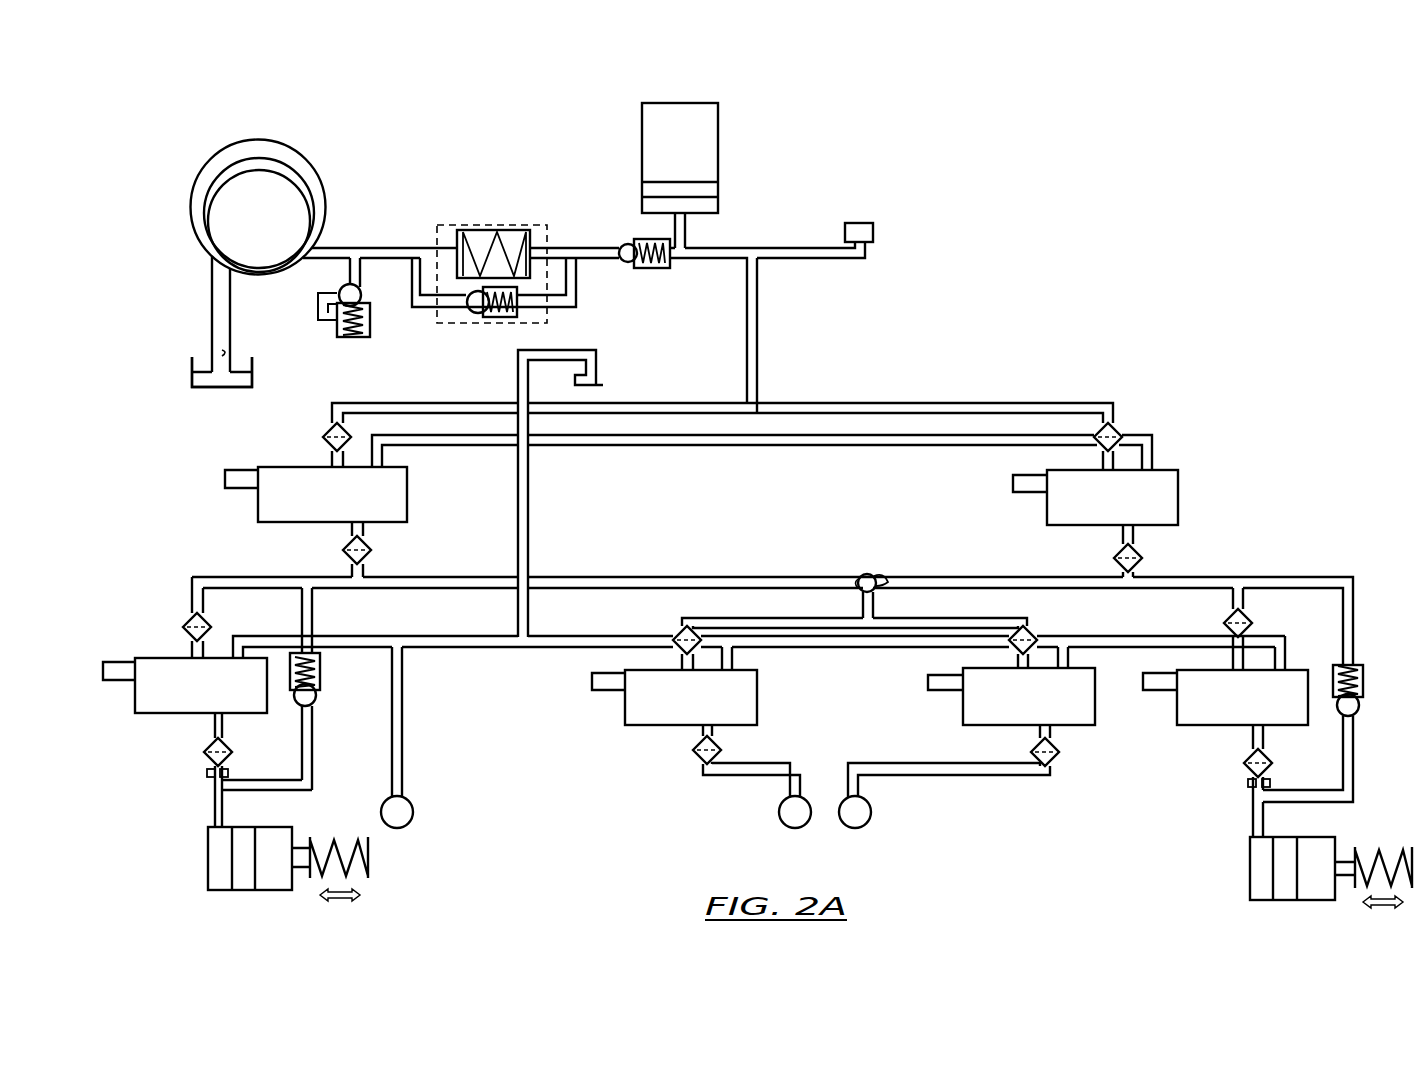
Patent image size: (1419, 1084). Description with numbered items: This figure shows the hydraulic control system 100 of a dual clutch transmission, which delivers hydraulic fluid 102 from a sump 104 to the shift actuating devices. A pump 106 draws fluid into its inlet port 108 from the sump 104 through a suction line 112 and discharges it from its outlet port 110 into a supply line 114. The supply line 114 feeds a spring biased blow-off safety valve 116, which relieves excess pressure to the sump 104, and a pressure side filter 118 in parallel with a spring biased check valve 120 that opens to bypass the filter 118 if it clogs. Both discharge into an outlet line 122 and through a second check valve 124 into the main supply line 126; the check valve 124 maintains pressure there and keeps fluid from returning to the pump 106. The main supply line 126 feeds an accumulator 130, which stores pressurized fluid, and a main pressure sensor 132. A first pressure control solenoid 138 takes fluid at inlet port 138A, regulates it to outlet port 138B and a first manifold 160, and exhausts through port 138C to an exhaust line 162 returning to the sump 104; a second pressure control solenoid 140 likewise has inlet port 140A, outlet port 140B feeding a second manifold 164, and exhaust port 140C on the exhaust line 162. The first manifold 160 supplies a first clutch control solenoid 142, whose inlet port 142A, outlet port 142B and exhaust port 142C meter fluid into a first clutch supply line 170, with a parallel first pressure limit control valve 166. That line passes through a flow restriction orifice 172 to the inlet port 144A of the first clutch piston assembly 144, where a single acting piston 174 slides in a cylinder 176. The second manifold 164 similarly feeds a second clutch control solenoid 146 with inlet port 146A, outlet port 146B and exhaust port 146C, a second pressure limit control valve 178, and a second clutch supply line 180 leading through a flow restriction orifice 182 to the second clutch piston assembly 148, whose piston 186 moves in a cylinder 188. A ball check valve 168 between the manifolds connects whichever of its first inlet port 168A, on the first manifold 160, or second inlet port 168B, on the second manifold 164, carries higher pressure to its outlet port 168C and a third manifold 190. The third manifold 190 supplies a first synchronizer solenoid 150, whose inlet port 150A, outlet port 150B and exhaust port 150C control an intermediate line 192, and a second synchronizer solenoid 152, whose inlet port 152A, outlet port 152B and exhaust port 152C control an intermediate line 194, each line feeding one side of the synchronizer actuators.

The hydraulic control system 100 is at (1030, 258).
The hydraulic fluid 102 is at (254, 364).
The sump 104 is at (318, 306).
The pump 106 is at (262, 140).
The inlet port 108 is at (216, 274).
The outlet port 110 is at (328, 242).
The suction line 112 is at (212, 353).
The supply line 114 is at (413, 246).
The spring biased blow-off safety valve 116 is at (337, 326).
The pressure side filter 118 is at (495, 228).
The spring biased check valve 120 is at (492, 320).
The outlet line 122 is at (550, 245).
The second check valve 124 is at (641, 270).
The main supply line 126 is at (775, 246).
The accumulator 130 is at (720, 140).
The main pressure sensor 132 is at (862, 222).
The first pressure control solenoid 138 is at (256, 506).
The inlet port 138A is at (332, 460).
The outlet port 138B is at (366, 529).
The exhaust port 138C is at (378, 434).
The second pressure control solenoid 140 is at (1046, 510).
The inlet port 140A is at (1104, 462).
The outlet port 140B is at (1136, 530).
The exhaust port 140C is at (1150, 434).
The first clutch control solenoid 142 is at (146, 715).
The inlet port 142A is at (192, 652).
The outlet port 142B is at (223, 725).
The exhaust port 142C is at (238, 652).
The first clutch piston assembly 144 is at (292, 830).
The inlet port 144A is at (214, 812).
The second clutch control solenoid 146 is at (1191, 728).
The inlet port 146A is at (1234, 655).
The outlet port 146B is at (1266, 736).
The exhaust port 146C is at (1283, 660).
The second clutch piston assembly 148 is at (1306, 901).
The first synchronizer solenoid 150 is at (626, 708).
The inlet port 150A is at (680, 663).
The outlet port 150B is at (704, 732).
The exhaust port 150C is at (734, 660).
The second synchronizer solenoid 152 is at (1095, 734).
The inlet port 152A is at (1015, 660).
The outlet port 152B is at (1042, 736).
The exhaust port 152C is at (1060, 660).
The first manifold 160 is at (551, 576).
The exhaust line 162 is at (678, 448).
The second manifold 164 is at (1035, 576).
The first pressure limit control valve 166 is at (321, 674).
The ball check valve 168 is at (868, 573).
The first inlet port 168A is at (850, 578).
The second inlet port 168B is at (888, 576).
The outlet port 168C is at (878, 600).
The first clutch supply line 170 is at (210, 750).
The flow restriction orifice 172 is at (228, 780).
The piston 174 is at (233, 891).
The cylinder 176 is at (283, 891).
The second pressure limit control valve 178 is at (1364, 680).
The second clutch supply line 180 is at (1356, 770).
The flow restriction orifice 182 is at (1250, 784).
The piston 186 is at (1284, 901).
The cylinder 188 is at (1250, 876).
The third manifold 190 is at (770, 615).
The intermediate line 192 is at (798, 762).
The intermediate line 194 is at (870, 762).